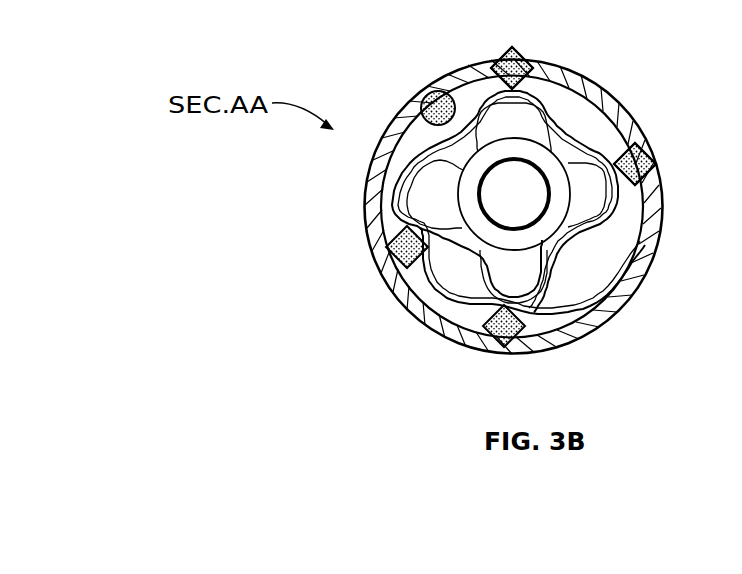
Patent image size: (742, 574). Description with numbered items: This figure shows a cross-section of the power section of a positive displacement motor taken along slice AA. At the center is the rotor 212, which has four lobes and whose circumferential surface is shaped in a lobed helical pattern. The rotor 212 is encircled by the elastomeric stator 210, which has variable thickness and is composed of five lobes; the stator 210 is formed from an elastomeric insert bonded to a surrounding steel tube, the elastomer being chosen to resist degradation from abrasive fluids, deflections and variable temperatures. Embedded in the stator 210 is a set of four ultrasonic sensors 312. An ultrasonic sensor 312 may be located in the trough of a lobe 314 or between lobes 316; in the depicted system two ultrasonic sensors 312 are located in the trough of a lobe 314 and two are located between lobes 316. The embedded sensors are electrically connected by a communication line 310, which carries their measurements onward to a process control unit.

The stator 210 is at (612, 253).
The rotor 212 is at (515, 272).
The communication line 310 is at (424, 100).
The ultrasonic sensor 312 is at (530, 60).
The trough of a lobe 314 is at (494, 62).
The between lobes 316 is at (380, 233).